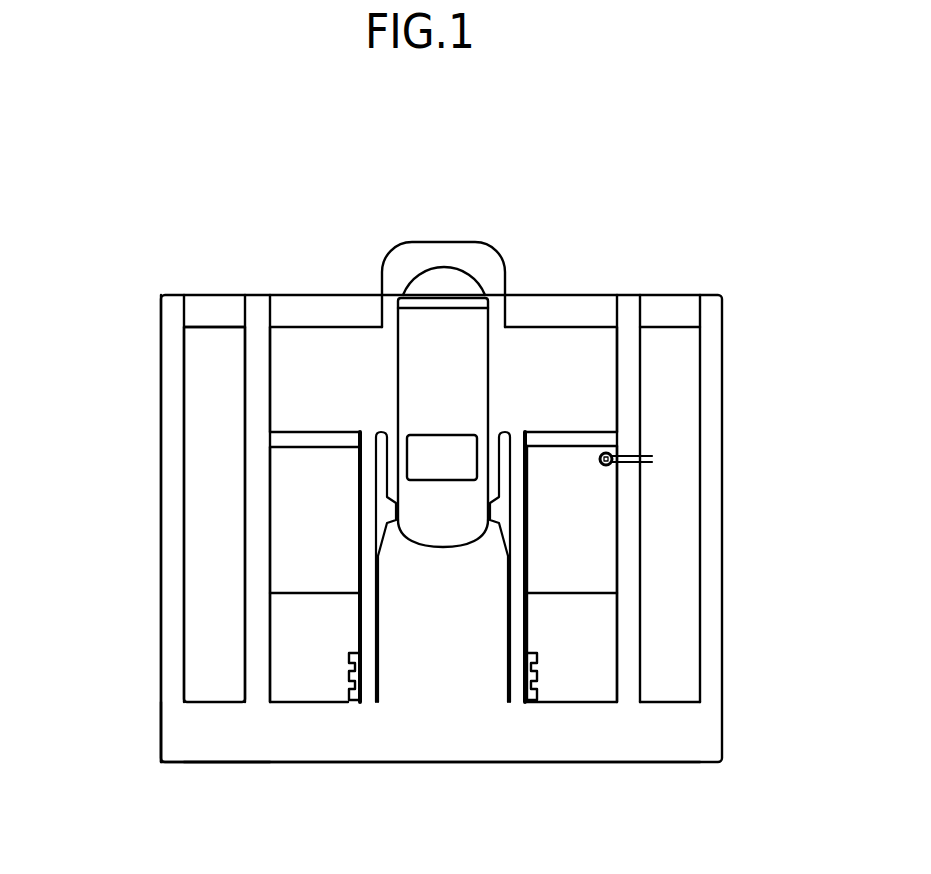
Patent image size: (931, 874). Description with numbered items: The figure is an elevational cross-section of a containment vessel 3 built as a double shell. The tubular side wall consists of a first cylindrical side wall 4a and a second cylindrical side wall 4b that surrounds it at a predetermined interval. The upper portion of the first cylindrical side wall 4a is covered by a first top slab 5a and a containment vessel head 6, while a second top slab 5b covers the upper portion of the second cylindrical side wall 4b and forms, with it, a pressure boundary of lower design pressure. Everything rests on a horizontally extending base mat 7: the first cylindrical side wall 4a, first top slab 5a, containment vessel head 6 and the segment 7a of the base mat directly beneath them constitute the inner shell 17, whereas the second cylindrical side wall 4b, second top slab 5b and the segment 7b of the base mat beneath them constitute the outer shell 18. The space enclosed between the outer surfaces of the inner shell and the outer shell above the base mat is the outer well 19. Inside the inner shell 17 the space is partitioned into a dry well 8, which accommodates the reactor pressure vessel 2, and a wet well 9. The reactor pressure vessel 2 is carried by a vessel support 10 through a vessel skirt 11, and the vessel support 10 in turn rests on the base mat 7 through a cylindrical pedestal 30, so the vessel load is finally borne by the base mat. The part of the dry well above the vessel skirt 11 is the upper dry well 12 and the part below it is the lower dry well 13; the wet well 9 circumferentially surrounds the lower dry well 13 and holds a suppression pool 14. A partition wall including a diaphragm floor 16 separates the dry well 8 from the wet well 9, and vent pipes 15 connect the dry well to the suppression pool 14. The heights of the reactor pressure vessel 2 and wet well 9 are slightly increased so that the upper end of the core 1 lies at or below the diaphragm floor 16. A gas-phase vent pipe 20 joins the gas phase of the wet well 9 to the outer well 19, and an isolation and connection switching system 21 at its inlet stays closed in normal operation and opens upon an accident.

The core 1 is at (440, 453).
The reactor pressure vessel 2 is at (420, 390).
The connector 3 is at (277, 246).
The first cylindrical side wall 4a is at (257, 380).
The second cylindrical side wall 4b is at (165, 562).
The first top slab 5a is at (305, 308).
The second top slab 5b is at (213, 305).
The containment vessel head 6 is at (468, 240).
The base mat 7 is at (628, 784).
The segment of base mat 7a is at (478, 755).
The segment of base mat 7b is at (212, 743).
The dry well 8 is at (601, 352).
The wet well 9 is at (580, 548).
The vessel support 10 is at (497, 517).
The vessel skirt 11 is at (395, 497).
The upper dry well 12 is at (582, 402).
The lower dry well 13 is at (428, 656).
The suppression pool 14 is at (587, 660).
The vent pipes 15 is at (365, 612).
The diaphragm floor 16 is at (312, 437).
The inner shell 17 is at (551, 289).
The outer shell 18 is at (677, 289).
The outer well 19 is at (212, 592).
The gas-phase vent pipe 20 is at (630, 465).
The isolation and connection switching system 21 is at (600, 457).
The cylindrical pedestal 30 is at (503, 543).